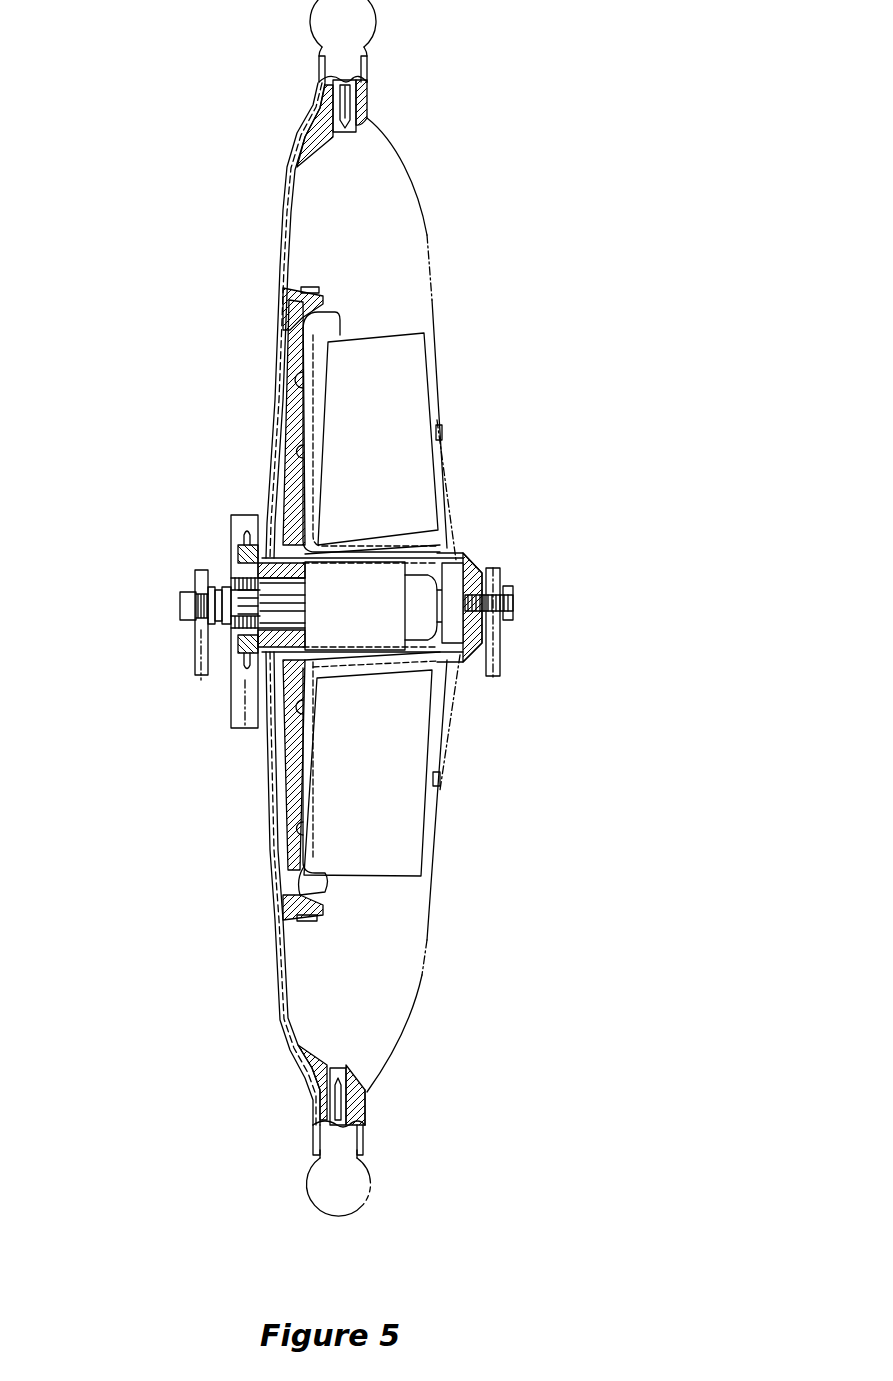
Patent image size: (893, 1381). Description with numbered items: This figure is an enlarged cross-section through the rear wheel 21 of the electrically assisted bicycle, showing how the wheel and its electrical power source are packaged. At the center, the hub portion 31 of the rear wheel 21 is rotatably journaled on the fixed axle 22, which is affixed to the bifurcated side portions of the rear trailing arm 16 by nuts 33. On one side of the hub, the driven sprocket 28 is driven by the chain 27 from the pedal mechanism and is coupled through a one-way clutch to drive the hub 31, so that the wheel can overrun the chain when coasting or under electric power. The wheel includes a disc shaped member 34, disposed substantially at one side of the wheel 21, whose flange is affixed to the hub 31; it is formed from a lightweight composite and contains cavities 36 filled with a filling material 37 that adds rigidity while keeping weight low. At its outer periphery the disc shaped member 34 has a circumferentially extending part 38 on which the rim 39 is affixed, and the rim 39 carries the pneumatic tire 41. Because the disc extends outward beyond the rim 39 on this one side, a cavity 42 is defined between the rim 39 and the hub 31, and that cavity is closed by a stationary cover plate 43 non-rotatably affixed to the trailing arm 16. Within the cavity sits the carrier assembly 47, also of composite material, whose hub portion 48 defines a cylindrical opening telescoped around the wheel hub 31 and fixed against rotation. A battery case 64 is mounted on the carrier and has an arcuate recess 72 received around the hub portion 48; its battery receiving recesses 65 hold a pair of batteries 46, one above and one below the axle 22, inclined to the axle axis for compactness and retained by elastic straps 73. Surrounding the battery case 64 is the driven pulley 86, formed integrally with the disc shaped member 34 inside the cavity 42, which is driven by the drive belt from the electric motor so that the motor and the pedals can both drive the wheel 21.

The rear trailing arm 16 is at (500, 573).
The rear wheel 21 is at (282, 250).
The fixed axle 22 is at (183, 605).
The chain 27 is at (240, 714).
The driven sprocket 28 is at (234, 535).
The hub portion 31 is at (392, 577).
The nuts 33 is at (512, 590).
The disc shaped member 34 is at (274, 299).
The cavities 36 is at (370, 113).
The filling material 37 is at (313, 132).
The circumferentially extending part 38 is at (370, 82).
The rim 39 is at (318, 62).
The pneumatic tire 41 is at (300, 23).
The cavity 42 is at (373, 276).
The stationary cover plate 43 is at (427, 217).
The batteries 46 is at (373, 355).
The carrier assembly 47 is at (448, 672).
The hub portion 48 is at (477, 580).
The battery case 64 is at (330, 316).
The battery receiving recesses 65 is at (300, 360).
The arcuate recess 72 is at (360, 575).
The elastic straps 73 is at (443, 430).
The driven pulley 86 is at (307, 290).